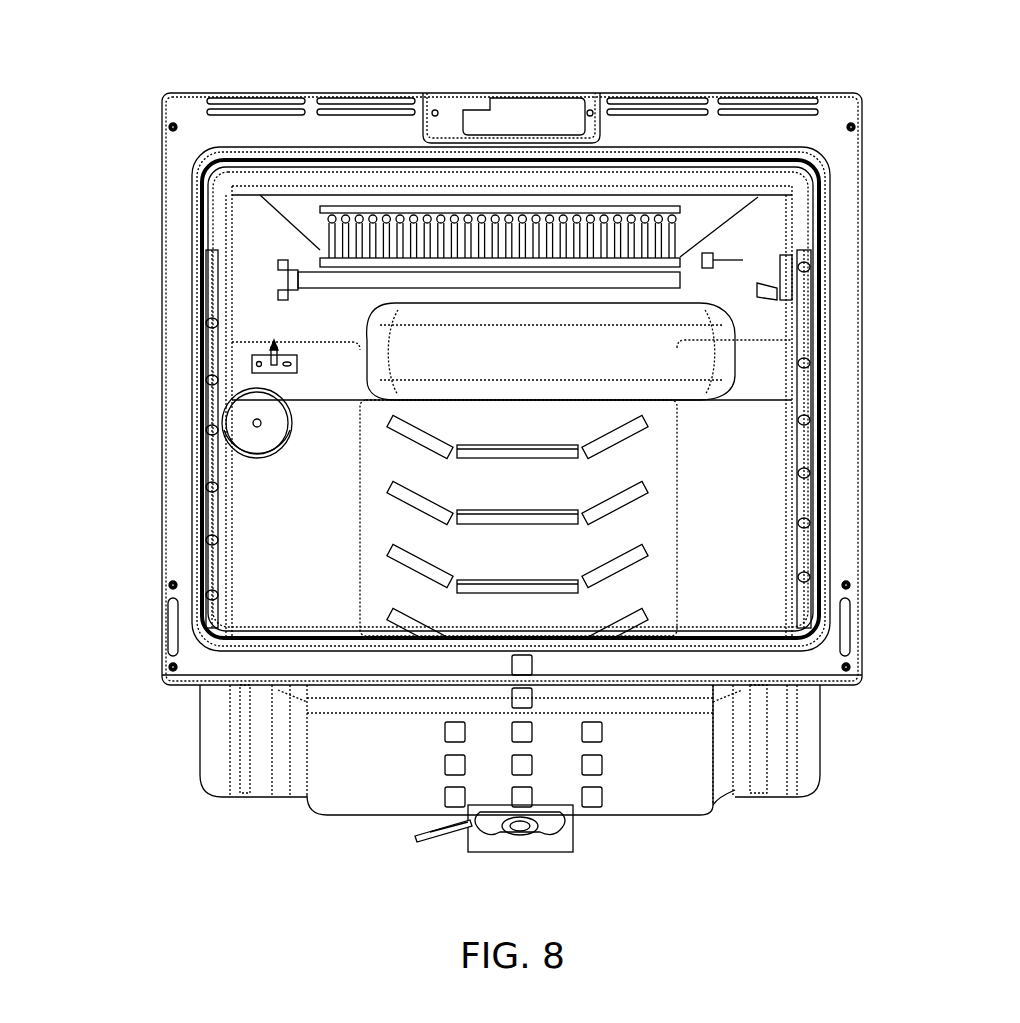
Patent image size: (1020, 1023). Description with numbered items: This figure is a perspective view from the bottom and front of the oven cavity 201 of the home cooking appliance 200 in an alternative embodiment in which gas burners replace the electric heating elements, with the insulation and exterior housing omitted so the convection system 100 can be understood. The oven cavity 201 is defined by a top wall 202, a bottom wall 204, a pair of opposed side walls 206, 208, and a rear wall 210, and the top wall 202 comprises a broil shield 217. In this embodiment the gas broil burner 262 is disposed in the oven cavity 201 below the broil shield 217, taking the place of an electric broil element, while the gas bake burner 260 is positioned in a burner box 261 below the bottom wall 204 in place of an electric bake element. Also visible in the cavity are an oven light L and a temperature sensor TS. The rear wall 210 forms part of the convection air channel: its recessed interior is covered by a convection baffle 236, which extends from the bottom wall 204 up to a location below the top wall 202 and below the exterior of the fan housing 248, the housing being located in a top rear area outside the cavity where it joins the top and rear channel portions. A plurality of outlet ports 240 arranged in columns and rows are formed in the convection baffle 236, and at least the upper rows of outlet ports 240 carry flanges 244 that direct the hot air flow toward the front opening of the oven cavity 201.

The convection system 100 is at (464, 340).
The home cooking appliance 200 is at (120, 611).
The oven cavity 201 is at (775, 500).
The top wall 202 is at (508, 168).
The bottom wall 204 is at (805, 733).
The side wall 206 is at (205, 405).
The side wall 208 is at (818, 340).
The rear wall 210 is at (240, 540).
The broil shield 217 is at (245, 180).
The convection baffle 236 is at (660, 585).
The outlet ports 240 is at (490, 447).
The flanges 244 is at (470, 580).
The fan housing 248 is at (655, 355).
The gas bake burner 260 is at (418, 766).
The burner box 261 is at (720, 778).
The gas broil burner 262 is at (322, 250).
The temperature sensor TS is at (298, 362).
The oven light L is at (268, 440).